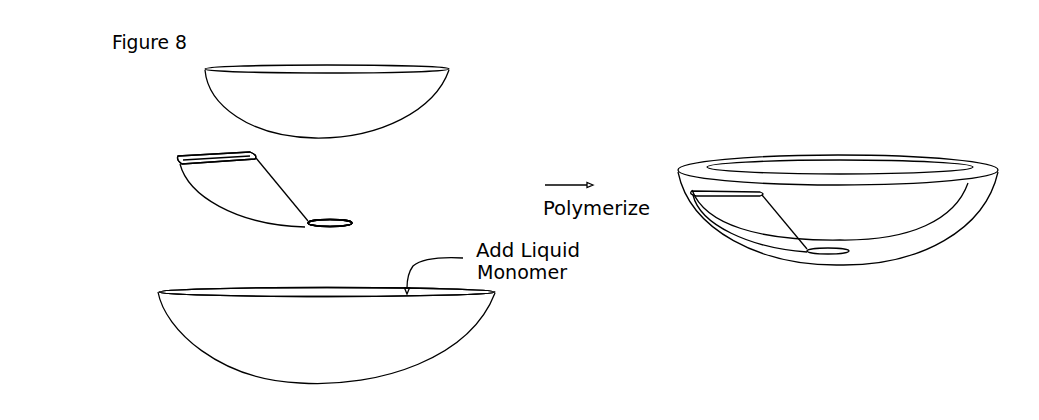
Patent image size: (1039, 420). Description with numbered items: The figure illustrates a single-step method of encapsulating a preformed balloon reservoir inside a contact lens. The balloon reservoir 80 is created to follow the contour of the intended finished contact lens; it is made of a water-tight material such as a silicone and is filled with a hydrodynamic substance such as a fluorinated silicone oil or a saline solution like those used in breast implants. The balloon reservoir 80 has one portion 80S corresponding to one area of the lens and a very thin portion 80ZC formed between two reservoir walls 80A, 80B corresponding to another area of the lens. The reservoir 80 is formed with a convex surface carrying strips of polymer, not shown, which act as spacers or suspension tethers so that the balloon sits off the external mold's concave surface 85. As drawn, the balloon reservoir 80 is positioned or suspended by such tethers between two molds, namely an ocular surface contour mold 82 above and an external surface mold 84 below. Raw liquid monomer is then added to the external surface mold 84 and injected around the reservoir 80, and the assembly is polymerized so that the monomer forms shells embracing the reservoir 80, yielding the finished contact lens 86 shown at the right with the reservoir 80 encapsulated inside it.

The balloon reservoir 80 is at (228, 196).
The portion of balloon reservoir 80S is at (190, 146).
The reservoir wall 80A is at (339, 212).
The reservoir wall 80B is at (337, 238).
The thin portion of balloon reservoir 80ZC is at (361, 222).
The ocular surface contour mold 82 is at (357, 117).
The external surface mold 84 is at (376, 357).
The concave surface of external mold 85 is at (474, 313).
The finished contact lens 86 is at (838, 210).